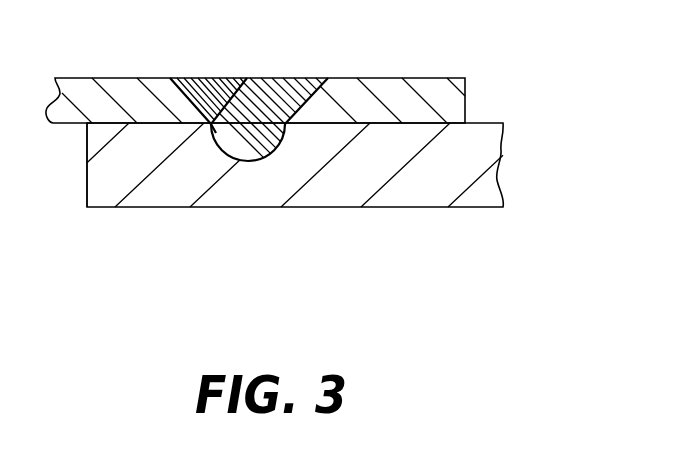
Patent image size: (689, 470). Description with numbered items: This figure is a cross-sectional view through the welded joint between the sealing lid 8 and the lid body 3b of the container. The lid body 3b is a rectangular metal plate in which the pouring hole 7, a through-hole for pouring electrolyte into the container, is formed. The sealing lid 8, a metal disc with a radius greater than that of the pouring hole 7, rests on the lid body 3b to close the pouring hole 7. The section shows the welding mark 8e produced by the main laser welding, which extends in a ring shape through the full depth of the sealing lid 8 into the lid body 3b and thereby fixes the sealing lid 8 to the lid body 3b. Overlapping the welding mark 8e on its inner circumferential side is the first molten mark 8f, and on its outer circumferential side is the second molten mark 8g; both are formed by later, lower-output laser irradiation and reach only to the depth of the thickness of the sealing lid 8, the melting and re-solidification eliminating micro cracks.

The sealing lid 8 is at (432, 88).
The lid body 3b is at (483, 140).
The welding mark 8e is at (250, 161).
The first molten mark 8f is at (216, 81).
The second molten mark 8g is at (294, 87).
The pouring hole 7 is at (87, 185).